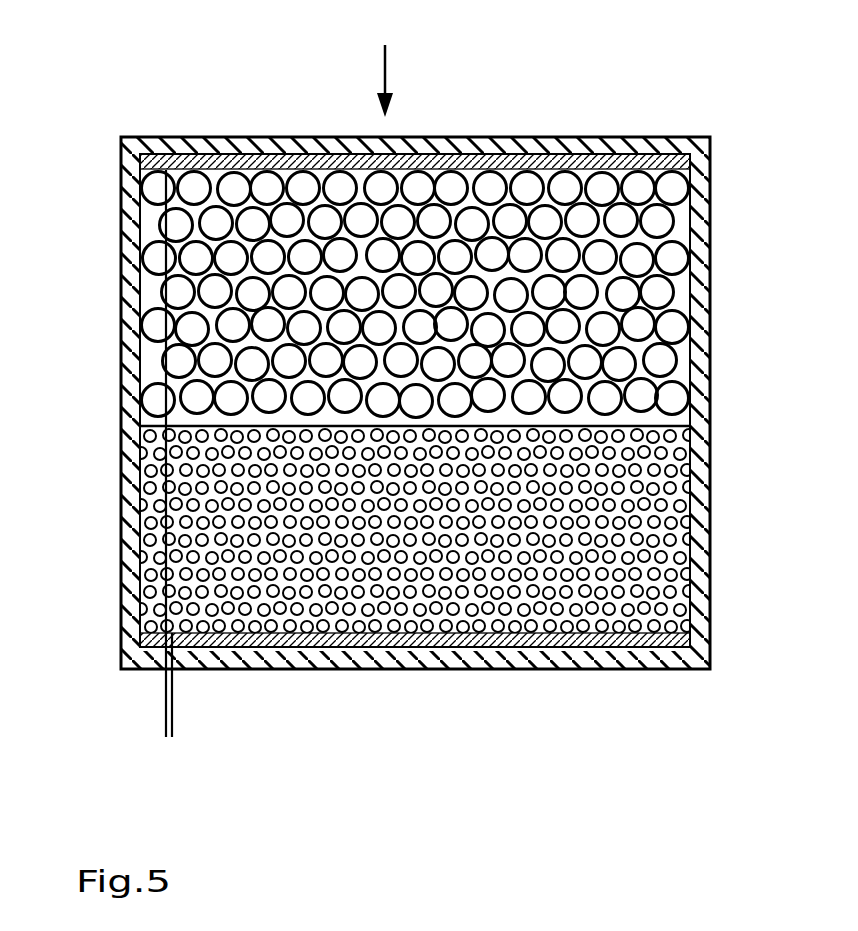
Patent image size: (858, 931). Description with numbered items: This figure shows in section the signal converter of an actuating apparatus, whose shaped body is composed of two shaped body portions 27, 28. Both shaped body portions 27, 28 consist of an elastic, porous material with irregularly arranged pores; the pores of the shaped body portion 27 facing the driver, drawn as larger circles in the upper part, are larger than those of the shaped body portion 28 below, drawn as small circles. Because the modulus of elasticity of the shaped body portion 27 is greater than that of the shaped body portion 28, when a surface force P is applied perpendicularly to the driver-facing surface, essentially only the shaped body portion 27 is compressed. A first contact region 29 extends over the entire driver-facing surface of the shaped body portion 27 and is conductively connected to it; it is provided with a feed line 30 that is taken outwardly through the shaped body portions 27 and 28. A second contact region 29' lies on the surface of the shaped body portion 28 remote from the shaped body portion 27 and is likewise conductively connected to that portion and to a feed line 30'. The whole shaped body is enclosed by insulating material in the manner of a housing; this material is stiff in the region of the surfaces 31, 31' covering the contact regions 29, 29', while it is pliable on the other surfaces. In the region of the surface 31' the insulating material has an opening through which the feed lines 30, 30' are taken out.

The shaped body portion 27 is at (664, 273).
The shaped body portion 28 is at (688, 465).
The first contact region 29 is at (415, 85).
The second contact region 29' is at (492, 627).
The feed line 30 is at (121, 466).
The feed line 30' is at (220, 697).
The surface 31 is at (415, 335).
The surface 31' is at (415, 705).
The surface force P is at (385, 59).